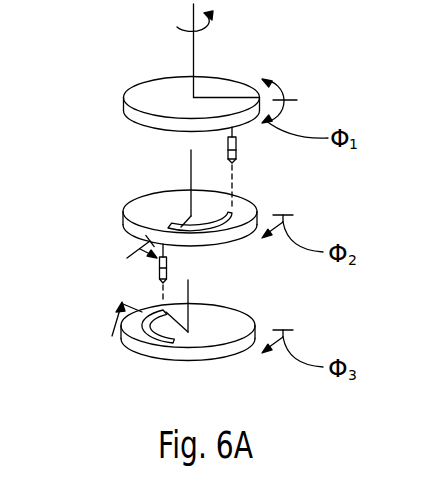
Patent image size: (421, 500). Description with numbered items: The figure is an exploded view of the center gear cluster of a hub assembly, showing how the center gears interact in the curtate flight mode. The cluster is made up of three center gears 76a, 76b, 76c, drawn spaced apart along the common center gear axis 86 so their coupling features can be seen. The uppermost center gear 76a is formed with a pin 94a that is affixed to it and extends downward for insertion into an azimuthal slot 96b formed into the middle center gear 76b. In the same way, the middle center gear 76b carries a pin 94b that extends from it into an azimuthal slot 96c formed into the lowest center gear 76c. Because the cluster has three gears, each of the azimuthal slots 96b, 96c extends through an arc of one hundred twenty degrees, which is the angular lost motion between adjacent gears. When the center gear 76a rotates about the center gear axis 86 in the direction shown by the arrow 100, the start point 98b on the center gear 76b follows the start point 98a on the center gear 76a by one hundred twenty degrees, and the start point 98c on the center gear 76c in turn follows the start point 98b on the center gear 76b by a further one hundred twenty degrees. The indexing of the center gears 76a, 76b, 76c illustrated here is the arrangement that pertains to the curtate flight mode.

The arrow 100 is at (213, 27).
The center gear axis 86 is at (194, 53).
The center gear 76a is at (137, 98).
The center gear 76b is at (137, 210).
The center gear 76c is at (237, 317).
The start point 98a is at (264, 80).
The start point 98b is at (124, 219).
The start point 98c is at (146, 331).
The pin 94a is at (237, 152).
The pin 94b is at (157, 273).
The azimuthal slot 96b is at (180, 226).
The azimuthal slot 96c is at (167, 342).